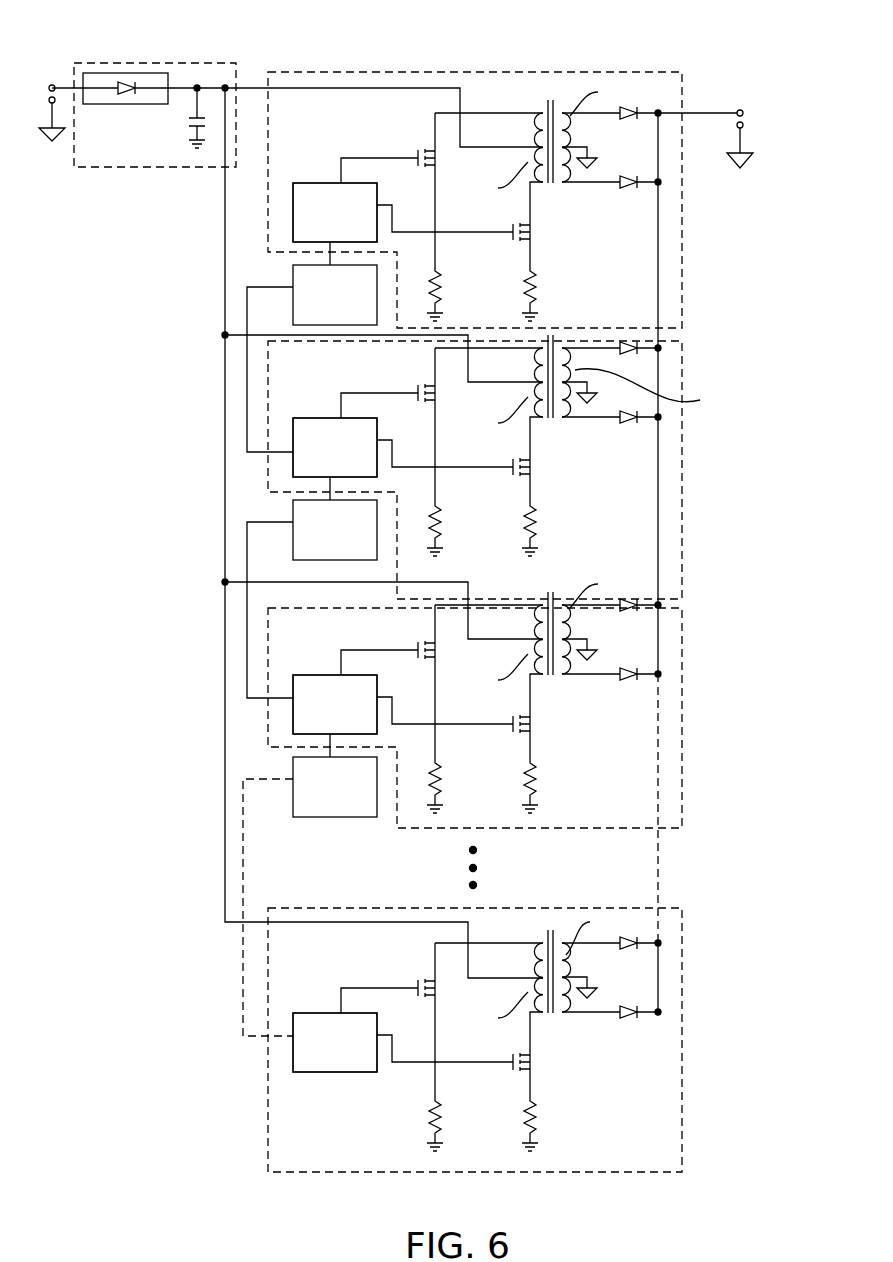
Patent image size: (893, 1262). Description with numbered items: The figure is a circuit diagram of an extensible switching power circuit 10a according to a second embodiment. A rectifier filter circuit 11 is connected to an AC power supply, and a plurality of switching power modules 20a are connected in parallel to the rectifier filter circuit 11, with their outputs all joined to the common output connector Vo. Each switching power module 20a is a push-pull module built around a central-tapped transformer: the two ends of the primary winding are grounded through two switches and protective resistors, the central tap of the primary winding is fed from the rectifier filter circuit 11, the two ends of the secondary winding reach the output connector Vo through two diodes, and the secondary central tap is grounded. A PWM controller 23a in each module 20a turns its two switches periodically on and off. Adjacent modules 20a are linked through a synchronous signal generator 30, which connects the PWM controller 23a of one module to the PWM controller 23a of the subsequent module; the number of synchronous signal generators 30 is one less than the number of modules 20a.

The extensible switching power circuit 10a is at (435, 595).
The rectifier filter circuit 11 is at (235, 65).
The switching power module 20a is at (625, 70).
The PWM controller 23a is at (328, 182).
The synchronous signal generator 30 is at (312, 290).